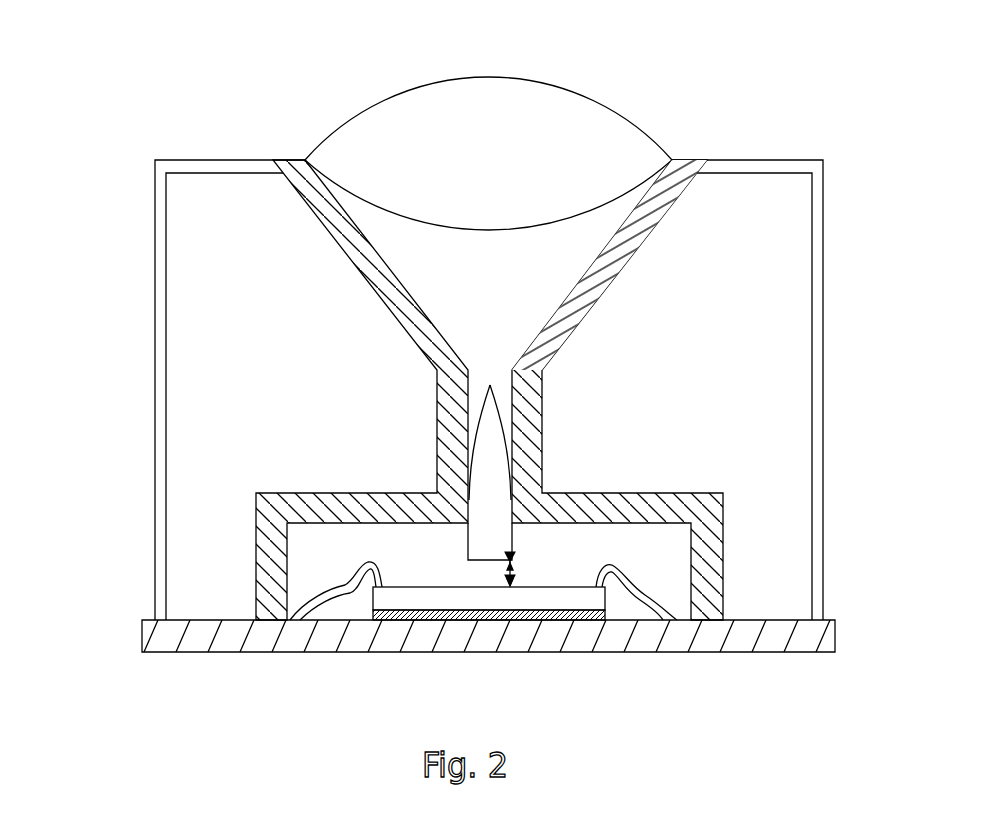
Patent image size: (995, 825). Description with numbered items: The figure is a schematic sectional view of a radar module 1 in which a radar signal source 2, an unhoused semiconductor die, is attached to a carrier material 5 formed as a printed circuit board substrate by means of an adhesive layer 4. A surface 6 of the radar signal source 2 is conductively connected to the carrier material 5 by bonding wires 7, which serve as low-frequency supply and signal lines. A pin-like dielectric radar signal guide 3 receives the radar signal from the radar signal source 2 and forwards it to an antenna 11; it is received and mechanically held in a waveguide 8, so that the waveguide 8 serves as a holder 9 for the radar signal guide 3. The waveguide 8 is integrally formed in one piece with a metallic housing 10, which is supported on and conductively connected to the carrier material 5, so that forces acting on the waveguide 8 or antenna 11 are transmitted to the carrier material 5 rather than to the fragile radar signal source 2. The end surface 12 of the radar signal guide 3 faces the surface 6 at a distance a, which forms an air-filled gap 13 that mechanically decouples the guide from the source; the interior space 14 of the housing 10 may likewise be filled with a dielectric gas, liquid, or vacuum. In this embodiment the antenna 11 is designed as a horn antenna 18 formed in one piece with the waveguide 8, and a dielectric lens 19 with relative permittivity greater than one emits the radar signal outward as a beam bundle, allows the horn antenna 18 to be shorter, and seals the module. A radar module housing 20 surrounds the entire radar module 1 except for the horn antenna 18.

The radar module 1 is at (438, 385).
The radar signal source 2 is at (568, 600).
The dielectric radar signal guide 3 is at (498, 453).
The adhesive layer 4 is at (395, 618).
The carrier material 5 is at (198, 633).
The surface 6 is at (412, 580).
The bonding wires 7 is at (320, 598).
The waveguide 8 is at (362, 390).
The holder 9 is at (450, 407).
The metallic housing 10 is at (529, 364).
The antenna 11 is at (657, 364).
The end surface 12 is at (486, 566).
The gap 13 is at (461, 573).
The interior space 14 is at (310, 576).
The horn antenna 18 is at (650, 222).
The dielectric lens 19 is at (585, 123).
The radar module housing 20 is at (160, 203).
The distance a is at (512, 573).